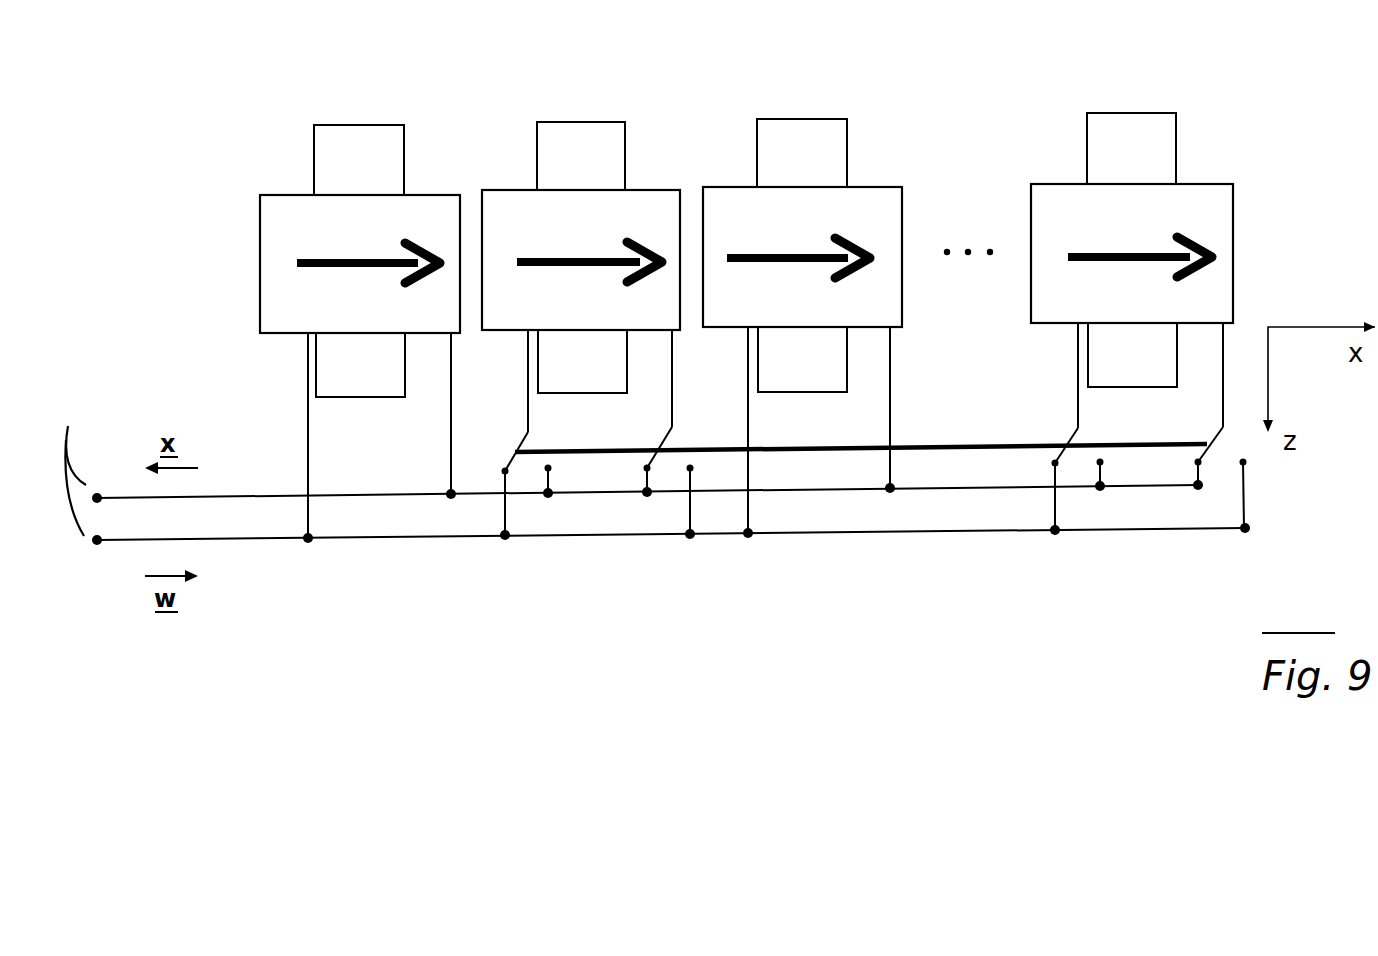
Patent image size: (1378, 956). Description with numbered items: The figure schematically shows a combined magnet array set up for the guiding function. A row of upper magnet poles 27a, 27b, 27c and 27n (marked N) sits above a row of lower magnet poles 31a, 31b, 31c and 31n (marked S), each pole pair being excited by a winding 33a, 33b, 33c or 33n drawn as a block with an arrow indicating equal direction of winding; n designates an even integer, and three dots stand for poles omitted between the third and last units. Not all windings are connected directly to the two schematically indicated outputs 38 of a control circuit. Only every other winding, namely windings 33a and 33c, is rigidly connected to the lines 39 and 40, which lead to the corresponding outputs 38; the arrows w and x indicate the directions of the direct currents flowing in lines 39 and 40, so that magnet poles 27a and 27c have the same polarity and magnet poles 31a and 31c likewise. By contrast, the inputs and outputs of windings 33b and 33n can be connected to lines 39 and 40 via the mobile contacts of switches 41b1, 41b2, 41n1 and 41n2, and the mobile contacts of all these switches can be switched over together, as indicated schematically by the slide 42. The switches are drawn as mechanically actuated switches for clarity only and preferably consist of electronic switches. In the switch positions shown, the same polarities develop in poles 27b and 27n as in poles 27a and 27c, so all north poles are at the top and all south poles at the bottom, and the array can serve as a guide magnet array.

The magnet pole 27a is at (382, 138).
The magnet pole 27b is at (605, 138).
The magnet pole 27c is at (830, 128).
The magnet pole 27n is at (1157, 125).
The winding 33a is at (275, 210).
The winding 33b is at (505, 217).
The winding 33c is at (732, 200).
The winding 33n is at (1200, 200).
The magnet pole 31a is at (332, 380).
The magnet pole 31b is at (593, 377).
The magnet pole 31c is at (820, 375).
The magnet pole 31n is at (1143, 373).
The output of control circuit 38 is at (70, 457).
The line 39 is at (253, 537).
The line 40 is at (253, 490).
The switch 41b1 is at (527, 473).
The switch 41b2 is at (665, 472).
The switch 41n1 is at (1075, 458).
The switch 41n2 is at (1220, 462).
The slide 42 is at (980, 442).